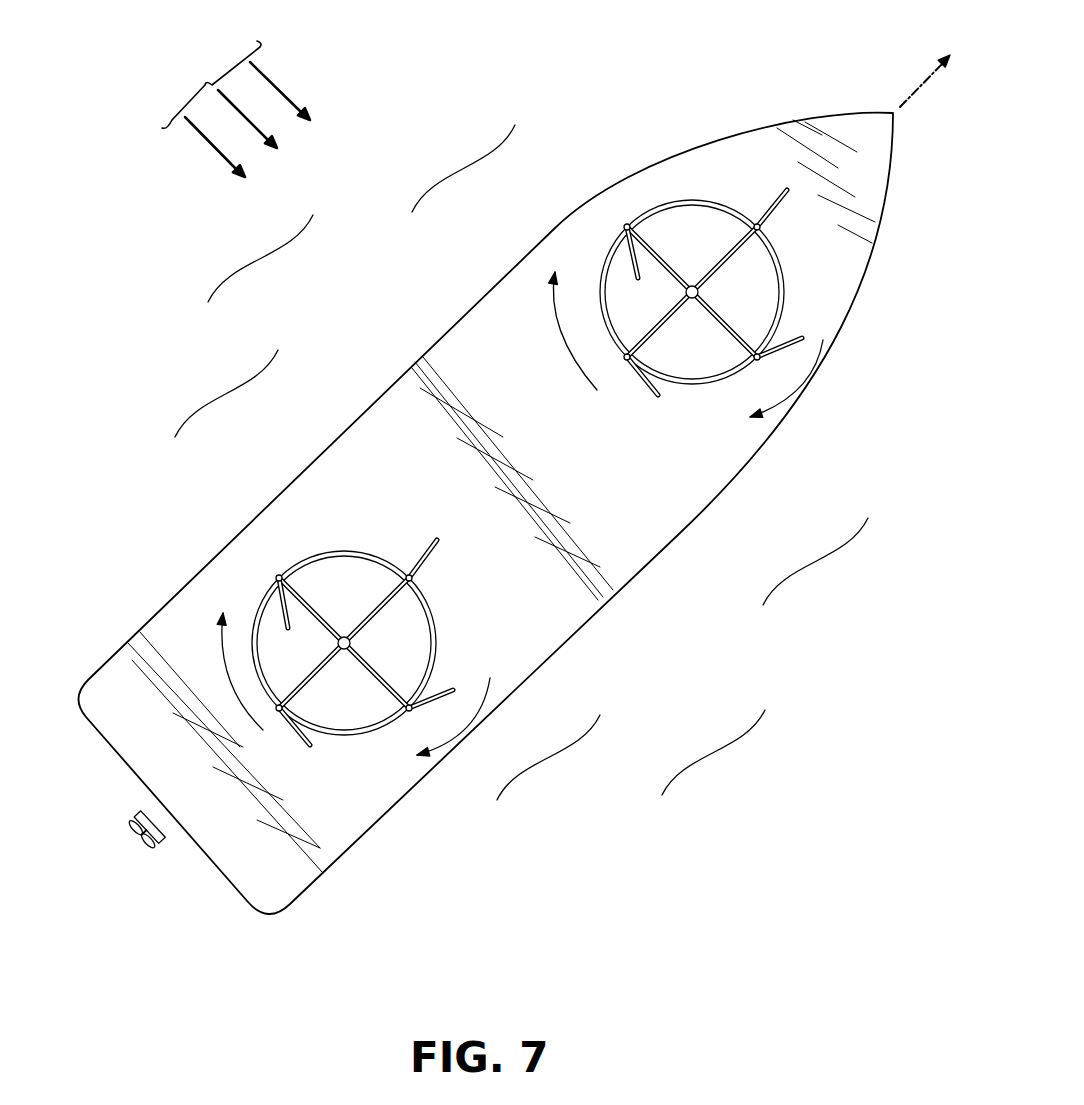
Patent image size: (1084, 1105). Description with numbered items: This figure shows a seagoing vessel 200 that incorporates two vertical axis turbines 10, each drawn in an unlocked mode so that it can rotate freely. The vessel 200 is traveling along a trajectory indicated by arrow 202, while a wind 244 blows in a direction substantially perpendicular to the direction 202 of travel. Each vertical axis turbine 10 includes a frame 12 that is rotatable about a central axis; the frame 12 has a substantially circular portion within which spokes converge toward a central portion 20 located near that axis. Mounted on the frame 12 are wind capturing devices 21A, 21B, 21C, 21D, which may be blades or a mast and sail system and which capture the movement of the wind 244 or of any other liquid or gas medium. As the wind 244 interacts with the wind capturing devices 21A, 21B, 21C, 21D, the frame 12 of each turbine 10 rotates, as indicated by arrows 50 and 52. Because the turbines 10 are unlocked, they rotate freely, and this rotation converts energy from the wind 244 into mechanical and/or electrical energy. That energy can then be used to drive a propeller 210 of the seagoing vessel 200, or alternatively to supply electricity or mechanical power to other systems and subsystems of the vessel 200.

The vertical axis turbine 10 is at (553, 500).
The frame 12 is at (707, 383).
The central portion 20 is at (688, 282).
The wind capturing device 21A is at (632, 268).
The wind capturing device 21B is at (655, 392).
The wind capturing device 21C is at (796, 338).
The wind capturing device 21D is at (778, 207).
The arrow 50 is at (558, 340).
The arrow 52 is at (797, 392).
The seagoing vessel 200 is at (706, 140).
The arrow 202 is at (918, 87).
The propeller 210 is at (143, 836).
The wind 244 is at (236, 109).